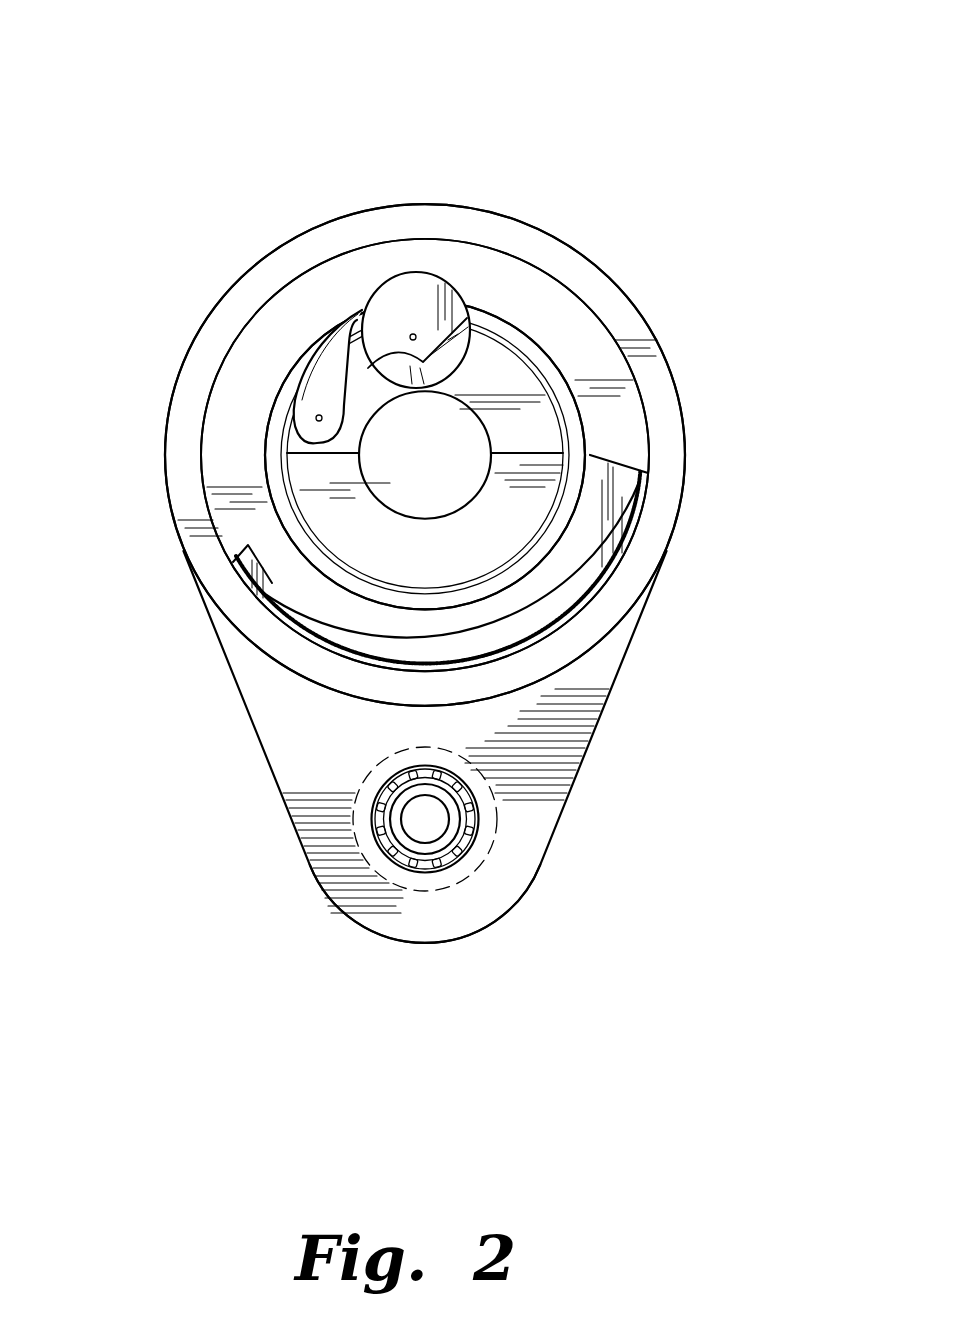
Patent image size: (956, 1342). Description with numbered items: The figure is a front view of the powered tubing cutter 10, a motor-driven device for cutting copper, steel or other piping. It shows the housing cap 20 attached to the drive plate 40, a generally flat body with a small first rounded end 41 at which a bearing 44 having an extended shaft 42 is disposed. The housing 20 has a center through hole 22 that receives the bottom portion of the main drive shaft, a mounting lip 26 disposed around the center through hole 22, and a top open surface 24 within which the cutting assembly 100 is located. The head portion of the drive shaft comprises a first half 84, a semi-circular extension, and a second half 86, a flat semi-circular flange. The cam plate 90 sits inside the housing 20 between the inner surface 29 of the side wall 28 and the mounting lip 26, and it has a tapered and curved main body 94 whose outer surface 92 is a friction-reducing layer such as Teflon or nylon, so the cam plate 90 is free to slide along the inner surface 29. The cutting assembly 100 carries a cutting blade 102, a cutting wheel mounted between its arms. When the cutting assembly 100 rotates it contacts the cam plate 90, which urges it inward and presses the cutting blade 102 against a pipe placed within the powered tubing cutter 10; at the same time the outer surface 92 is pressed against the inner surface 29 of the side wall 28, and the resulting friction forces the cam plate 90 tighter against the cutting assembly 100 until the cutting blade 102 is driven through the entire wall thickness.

The powered tubing cutter 10 is at (513, 114).
The housing cap 20 is at (540, 247).
The center through hole 22 is at (395, 480).
The top open surface 24 is at (256, 458).
The mounting lip 26 is at (280, 407).
The side wall 28 is at (222, 307).
The inner surface 29 is at (268, 303).
The drive plate 40 is at (525, 858).
The first rounded end 41 is at (425, 945).
The extended shaft 42 is at (393, 820).
The bearing 44 is at (365, 880).
The first half 84 is at (507, 535).
The second half 86 is at (543, 432).
The cam plate 90 is at (527, 634).
The outer surface 92 is at (333, 650).
The main body 94 is at (627, 492).
The cutting assembly 100 is at (413, 282).
The cutting blade 102 is at (467, 303).